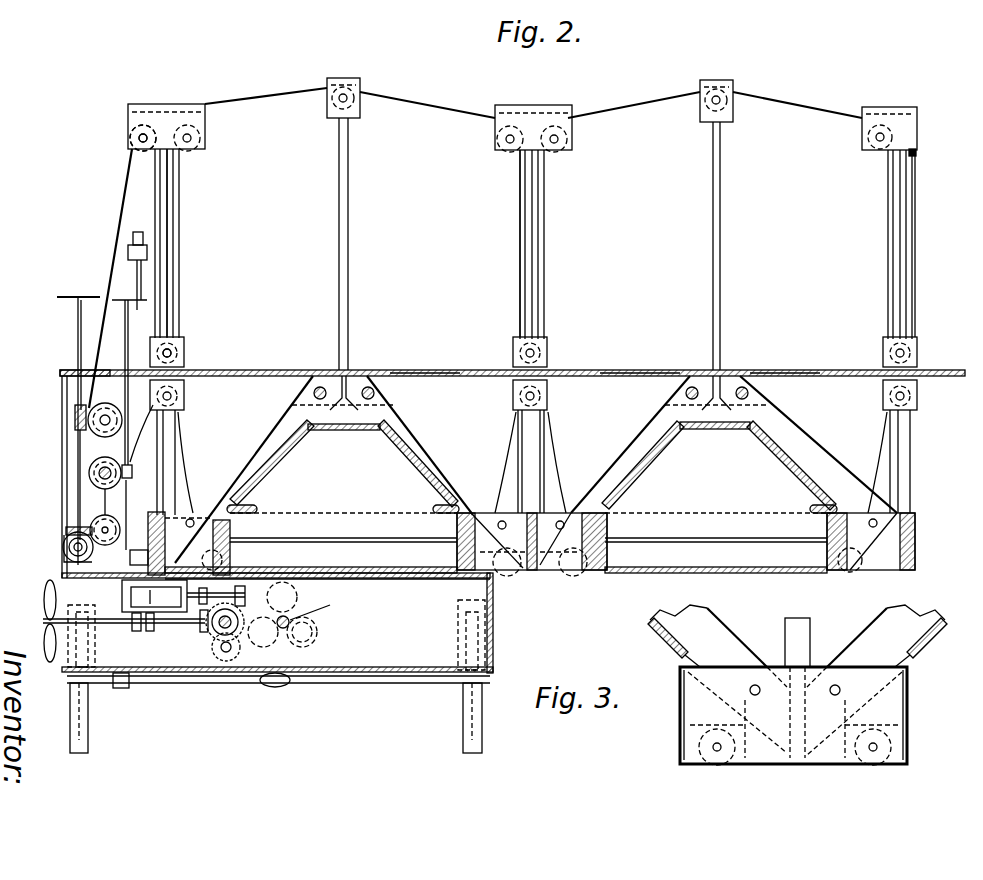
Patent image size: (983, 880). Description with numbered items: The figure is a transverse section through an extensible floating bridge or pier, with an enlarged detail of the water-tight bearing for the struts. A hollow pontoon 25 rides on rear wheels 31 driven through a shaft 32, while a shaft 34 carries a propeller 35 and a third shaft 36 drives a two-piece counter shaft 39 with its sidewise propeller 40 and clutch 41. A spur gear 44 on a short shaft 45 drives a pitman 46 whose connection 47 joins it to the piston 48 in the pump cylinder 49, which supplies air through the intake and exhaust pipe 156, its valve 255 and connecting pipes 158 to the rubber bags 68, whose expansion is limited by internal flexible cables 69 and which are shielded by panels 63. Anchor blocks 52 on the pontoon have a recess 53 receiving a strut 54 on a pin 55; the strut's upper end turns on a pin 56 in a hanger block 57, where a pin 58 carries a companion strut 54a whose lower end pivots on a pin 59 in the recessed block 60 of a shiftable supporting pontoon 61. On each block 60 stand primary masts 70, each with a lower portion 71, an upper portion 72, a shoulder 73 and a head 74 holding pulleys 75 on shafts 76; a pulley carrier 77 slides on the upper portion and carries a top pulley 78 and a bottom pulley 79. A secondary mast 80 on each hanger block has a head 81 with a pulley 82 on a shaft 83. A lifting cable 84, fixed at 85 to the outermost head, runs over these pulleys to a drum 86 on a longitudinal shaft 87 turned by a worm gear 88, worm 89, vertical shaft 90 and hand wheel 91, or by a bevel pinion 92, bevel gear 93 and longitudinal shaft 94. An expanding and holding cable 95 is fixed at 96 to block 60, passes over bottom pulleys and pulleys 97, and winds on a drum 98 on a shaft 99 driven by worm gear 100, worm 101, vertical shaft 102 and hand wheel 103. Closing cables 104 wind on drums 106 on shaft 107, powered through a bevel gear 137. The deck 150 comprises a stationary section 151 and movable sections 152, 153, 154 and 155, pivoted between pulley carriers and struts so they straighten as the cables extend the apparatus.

In FIG. 2, the pontoon 25 is at (492, 600).
In FIG. 2, the rear wheels 31 is at (72, 733).
In FIG. 2, the shaft 32 is at (250, 645).
In FIG. 2, the shaft 34 is at (320, 609).
In FIG. 2, the propeller 35 is at (318, 631).
In FIG. 2, the third shaft 36 is at (200, 628).
In FIG. 2, the counter shaft 39 is at (93, 650).
In FIG. 2, the propeller 40 is at (45, 592).
In FIG. 2, the clutch 41 is at (138, 631).
In FIG. 2, the spur gear 44 is at (212, 655).
In FIG. 2, the short shaft 45 is at (212, 638).
In FIG. 2, the pitman 46 is at (243, 590).
In FIG. 2, the cylinder 47 is at (123, 586).
In FIG. 2, the piston 48 is at (131, 600).
In FIG. 2, the pump cylinder 49 is at (132, 620).
In FIG. 2, the anchor blocks 52 is at (186, 475).
In FIG. 2, the recess 53 is at (230, 532).
In FIG. 2, the strut 54 is at (262, 437).
In FIG. 3, the strut 54 is at (868, 626).
In FIG. 2, the companion strut 54a is at (420, 440).
In FIG. 3, the companion strut 54a is at (728, 628).
In FIG. 2, the pin 55 is at (165, 520).
In FIG. 2, the pin 56 is at (314, 393).
In FIG. 2, the hanger block 57 is at (345, 430).
In FIG. 2, the pin 58 is at (374, 393).
In FIG. 2, the pin 59 is at (502, 529).
In FIG. 2, the recessed block 60 is at (535, 572).
In FIG. 3, the recessed block 60 is at (685, 712).
In FIG. 2, the supporting pontoon 61 is at (458, 545).
In FIG. 3, the supporting pontoon 61 is at (680, 693).
In FIG. 2, the panels 63 is at (278, 460).
In FIG. 3, the panels 63 is at (658, 632).
In FIG. 2, the rubber bag 68 is at (318, 425).
In FIG. 2, the flexible cables 69 is at (437, 537).
In FIG. 2, the primary mast 70 is at (170, 212).
In FIG. 2, the lower portion 71 is at (170, 445).
In FIG. 3, the lower portion 71 is at (810, 640).
In FIG. 2, the upper portion 72 is at (165, 248).
In FIG. 2, the shoulder 73 is at (176, 420).
In FIG. 2, the head 74 is at (130, 124).
In FIG. 2, the pulleys 75 is at (132, 138).
In FIG. 2, the shafts 76 is at (140, 150).
In FIG. 3, the shafts 76 is at (782, 628).
In FIG. 2, the pulley carrier 77 is at (183, 345).
In FIG. 2, the top pulley 78 is at (183, 358).
In FIG. 2, the bottom pulley 79 is at (175, 395).
In FIG. 2, the secondary mast 80 is at (338, 272).
In FIG. 2, the head 81 is at (327, 82).
In FIG. 2, the pulley 82 is at (333, 104).
In FIG. 2, the shaft 83 is at (350, 102).
In FIG. 2, the lifting cable 84 is at (152, 190).
In FIG. 2, the fixed end 85 is at (917, 152).
In FIG. 2, the drum 86 is at (95, 432).
In FIG. 2, the longitudinal shaft 87 is at (75, 418).
In FIG. 2, the worm gear 88 is at (88, 440).
In FIG. 2, the worm 89 is at (86, 421).
In FIG. 2, the vertical shaft 90 is at (78, 345).
In FIG. 2, the hand wheel 91 is at (58, 297).
In FIG. 2, the bevel pinion 92 is at (68, 530).
In FIG. 2, the bevel gear 93 is at (63, 547).
In FIG. 2, the longitudinal shaft 94 is at (62, 556).
In FIG. 2, the expanding and holding cable 95 is at (740, 574).
In FIG. 2, the fixed end 96 is at (405, 580).
In FIG. 2, the pulley 97 is at (232, 560).
In FIG. 3, the pulley 97 is at (710, 765).
In FIG. 2, the drum 98 is at (89, 476).
In FIG. 2, the longitudinal shaft 99 is at (99, 478).
In FIG. 2, the worm gear 100 is at (103, 490).
In FIG. 2, the worm 101 is at (127, 480).
In FIG. 2, the vertical shaft 102 is at (125, 345).
In FIG. 2, the hand wheel 103 is at (118, 296).
In FIG. 2, the closing cables 104 is at (140, 495).
In FIG. 2, the drums 106 is at (105, 546).
In FIG. 2, the longitudinal shaft 107 is at (112, 535).
In FIG. 2, the bevel gear 137 is at (190, 527).
In FIG. 2, the deck 150 is at (60, 372).
In FIG. 2, the stationary section 151 is at (60, 380).
In FIG. 2, the movable section 152 is at (283, 369).
In FIG. 2, the movable platform section 153 is at (425, 369).
In FIG. 2, the movable platform section 154 is at (640, 369).
In FIG. 2, the movable section 155 is at (785, 369).
In FIG. 2, the intake and exhaust pipe 156 is at (137, 268).
In FIG. 2, the connecting pipes 158 is at (560, 529).
In FIG. 2, the valve 255 is at (125, 252).